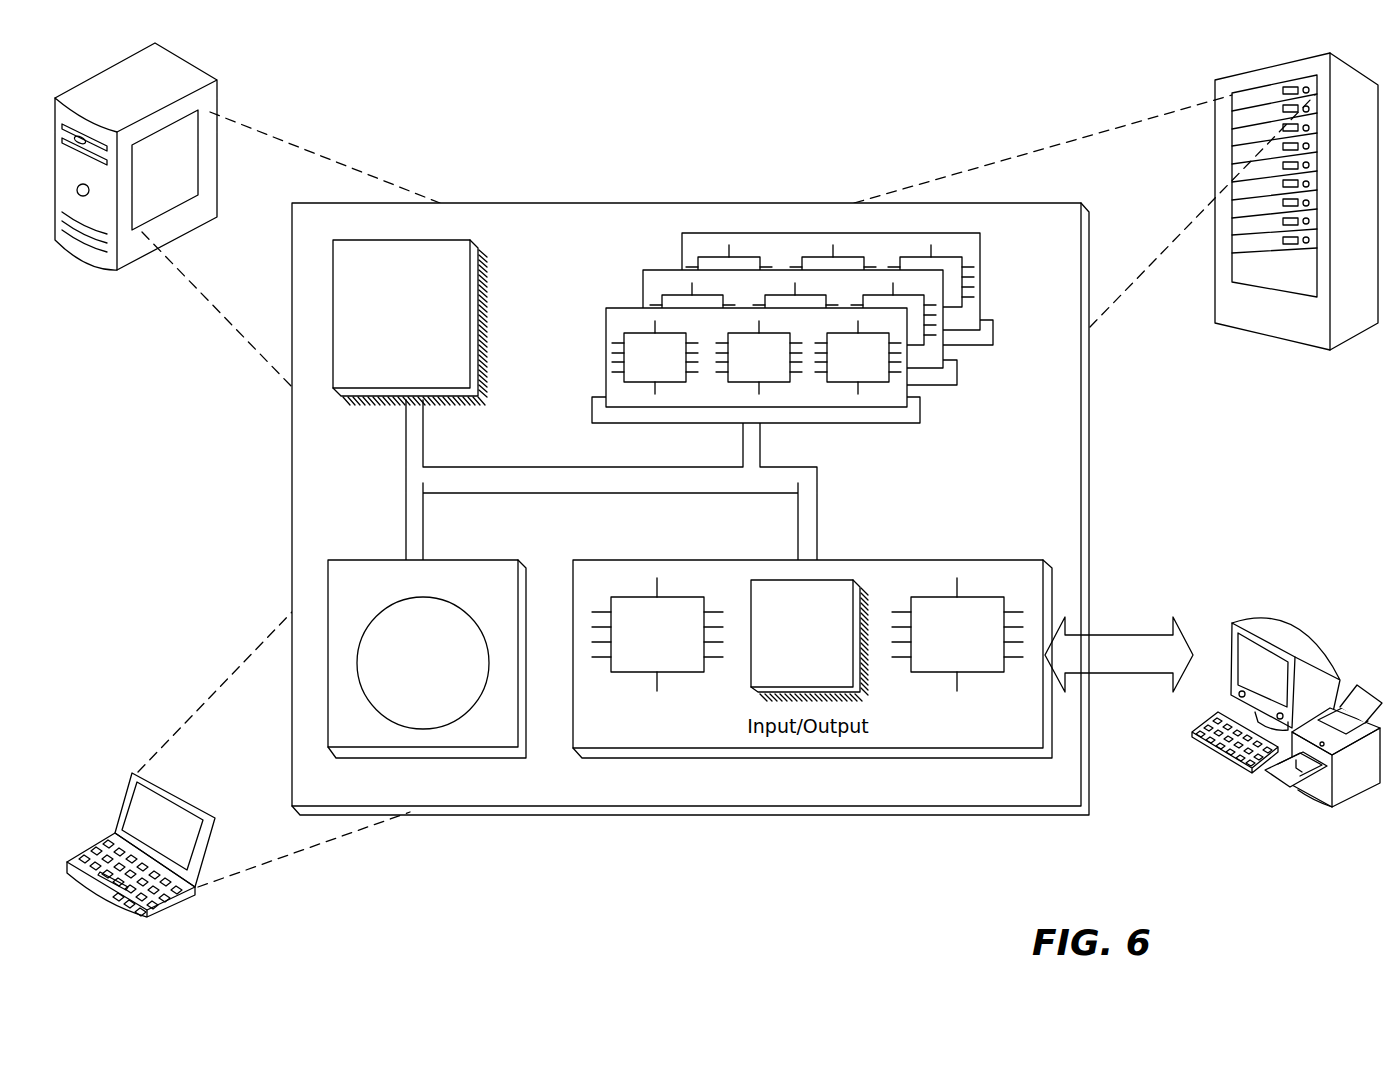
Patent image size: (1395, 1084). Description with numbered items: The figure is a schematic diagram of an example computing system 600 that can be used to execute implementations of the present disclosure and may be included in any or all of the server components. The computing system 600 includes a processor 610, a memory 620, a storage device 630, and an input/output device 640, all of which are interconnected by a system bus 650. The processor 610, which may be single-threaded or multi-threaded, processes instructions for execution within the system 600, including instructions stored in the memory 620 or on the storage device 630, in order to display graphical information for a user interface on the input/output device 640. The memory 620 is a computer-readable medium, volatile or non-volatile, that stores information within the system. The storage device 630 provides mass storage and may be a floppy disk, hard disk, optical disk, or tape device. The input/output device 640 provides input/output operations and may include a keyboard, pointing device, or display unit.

The computing system 600 is at (502, 120).
The processor 610 is at (460, 379).
The memory 620 is at (988, 386).
The storage device 630 is at (508, 739).
The input/output device 640 is at (1228, 626).
The system bus 650 is at (608, 484).